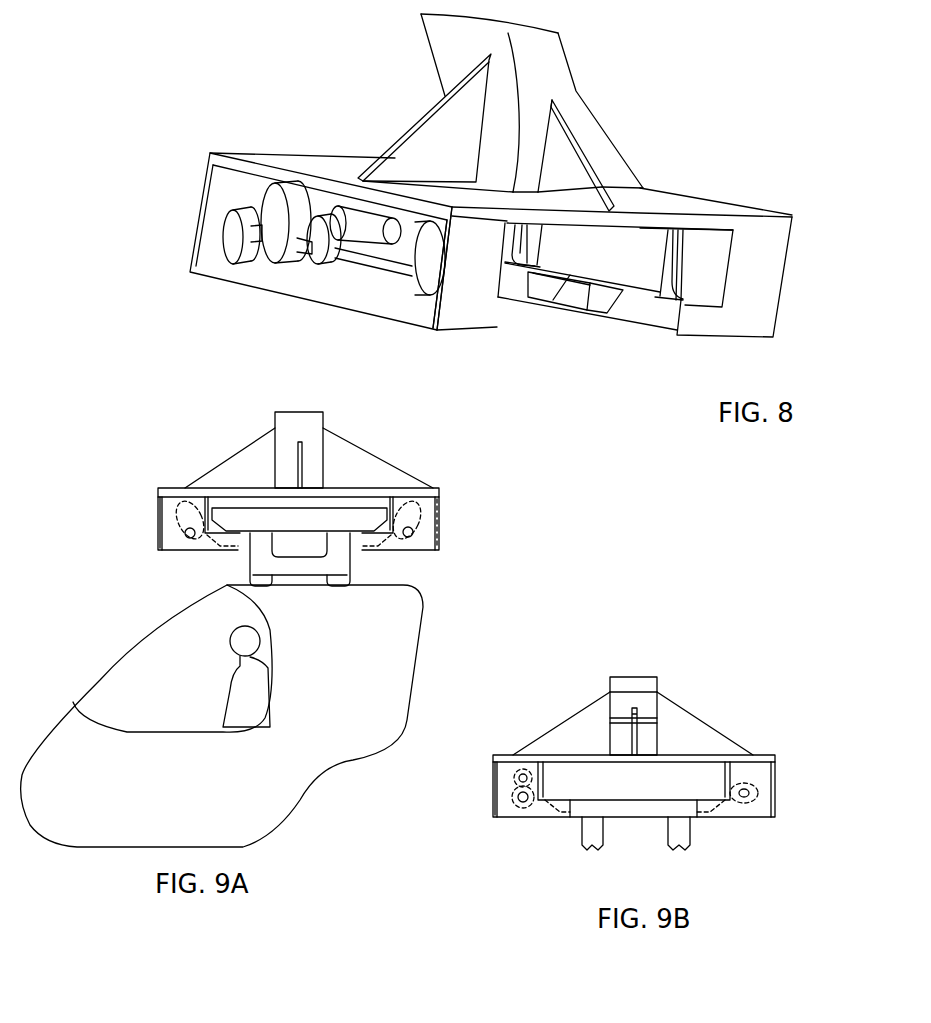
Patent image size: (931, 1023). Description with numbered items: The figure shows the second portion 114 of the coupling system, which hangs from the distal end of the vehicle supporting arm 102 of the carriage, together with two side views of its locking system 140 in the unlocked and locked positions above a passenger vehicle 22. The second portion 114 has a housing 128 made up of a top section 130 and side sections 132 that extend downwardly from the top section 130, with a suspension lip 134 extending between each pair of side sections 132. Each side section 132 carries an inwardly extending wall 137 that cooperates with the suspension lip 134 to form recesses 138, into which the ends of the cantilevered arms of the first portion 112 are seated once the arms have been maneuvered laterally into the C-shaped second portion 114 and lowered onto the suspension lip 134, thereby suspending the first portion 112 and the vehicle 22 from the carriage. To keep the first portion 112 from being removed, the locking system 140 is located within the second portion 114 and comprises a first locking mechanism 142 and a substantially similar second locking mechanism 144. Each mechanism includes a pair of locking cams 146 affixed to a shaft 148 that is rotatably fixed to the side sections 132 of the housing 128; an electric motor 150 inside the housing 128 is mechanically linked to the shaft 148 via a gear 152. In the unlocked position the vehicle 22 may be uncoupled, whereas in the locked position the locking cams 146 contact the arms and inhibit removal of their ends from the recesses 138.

In FIG. 9A, the passenger vehicle 22 is at (155, 622).
In FIG. 8, the vehicle supporting arm 102 is at (557, 52).
In FIG. 9B, the vehicle supporting arm 102 is at (659, 683).
In FIG. 9A, the first portion 112 is at (354, 562).
In FIG. 9B, the first portion 112 is at (696, 837).
In FIG. 8, the second portion 114 is at (713, 191).
In FIG. 9A, the second portion 114 is at (355, 447).
In FIG. 9B, the second portion 114 is at (705, 713).
In FIG. 8, the housing 128 is at (323, 155).
In FIG. 9A, the housing 128 is at (441, 488).
In FIG. 9B, the housing 128 is at (775, 755).
In FIG. 8, the top section 130 is at (275, 160).
In FIG. 9A, the top section 130 is at (165, 490).
In FIG. 9B, the top section 130 is at (493, 762).
In FIG. 8, the side sections 132 is at (462, 320).
In FIG. 9A, the side sections 132 is at (168, 545).
In FIG. 9B, the side sections 132 is at (505, 812).
In FIG. 8, the suspension lip 134 is at (665, 313).
In FIG. 8, the inwardly extending wall 137 is at (522, 325).
In FIG. 8, the recesses 138 is at (618, 328).
In FIG. 8, the locking system 140 is at (174, 216).
In FIG. 8, the first locking mechanism 142 is at (227, 254).
In FIG. 9A, the first locking mechanism 142 is at (160, 508).
In FIG. 9B, the first locking mechanism 142 is at (508, 785).
In FIG. 9A, the second locking mechanism 144 is at (436, 511).
In FIG. 9B, the second locking mechanism 144 is at (757, 778).
In FIG. 8, the locking cams 146 is at (260, 254).
In FIG. 9A, the locking cams 146 is at (420, 528).
In FIG. 9B, the locking cams 146 is at (547, 762).
In FIG. 8, the shaft 148 is at (383, 268).
In FIG. 9A, the shaft 148 is at (416, 547).
In FIG. 9B, the shaft 148 is at (512, 803).
In FIG. 8, the electric motor 150 is at (361, 232).
In FIG. 8, the gear 152 is at (268, 256).